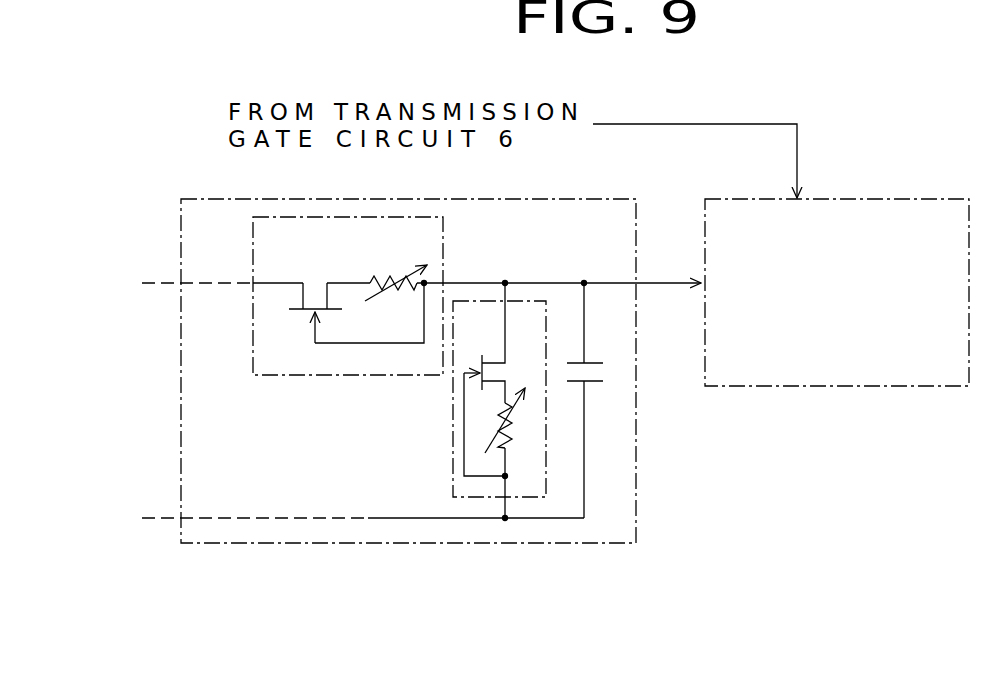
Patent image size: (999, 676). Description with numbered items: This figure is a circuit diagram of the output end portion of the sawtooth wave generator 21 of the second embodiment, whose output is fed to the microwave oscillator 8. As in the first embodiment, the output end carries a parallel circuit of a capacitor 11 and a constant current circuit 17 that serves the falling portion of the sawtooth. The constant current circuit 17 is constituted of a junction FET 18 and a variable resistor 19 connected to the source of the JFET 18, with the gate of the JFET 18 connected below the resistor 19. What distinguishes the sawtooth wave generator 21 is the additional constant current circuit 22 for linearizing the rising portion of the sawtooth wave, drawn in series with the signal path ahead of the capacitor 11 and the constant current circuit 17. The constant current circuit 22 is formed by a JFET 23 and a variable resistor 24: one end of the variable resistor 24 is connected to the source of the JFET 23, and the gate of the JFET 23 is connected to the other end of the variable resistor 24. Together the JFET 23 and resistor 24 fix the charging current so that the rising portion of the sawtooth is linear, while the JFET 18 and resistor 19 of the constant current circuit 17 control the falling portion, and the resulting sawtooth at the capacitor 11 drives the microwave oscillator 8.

The microwave oscillator 8 is at (840, 373).
The capacitor 11 is at (610, 373).
The constant current circuit 17 is at (450, 395).
The junction FET 18 is at (480, 348).
The variable resistor 19 is at (518, 423).
The sawtooth wave generator 21 is at (450, 543).
The constant current circuit 22 is at (360, 377).
The JFET 23 is at (316, 288).
The variable resistor 24 is at (392, 270).